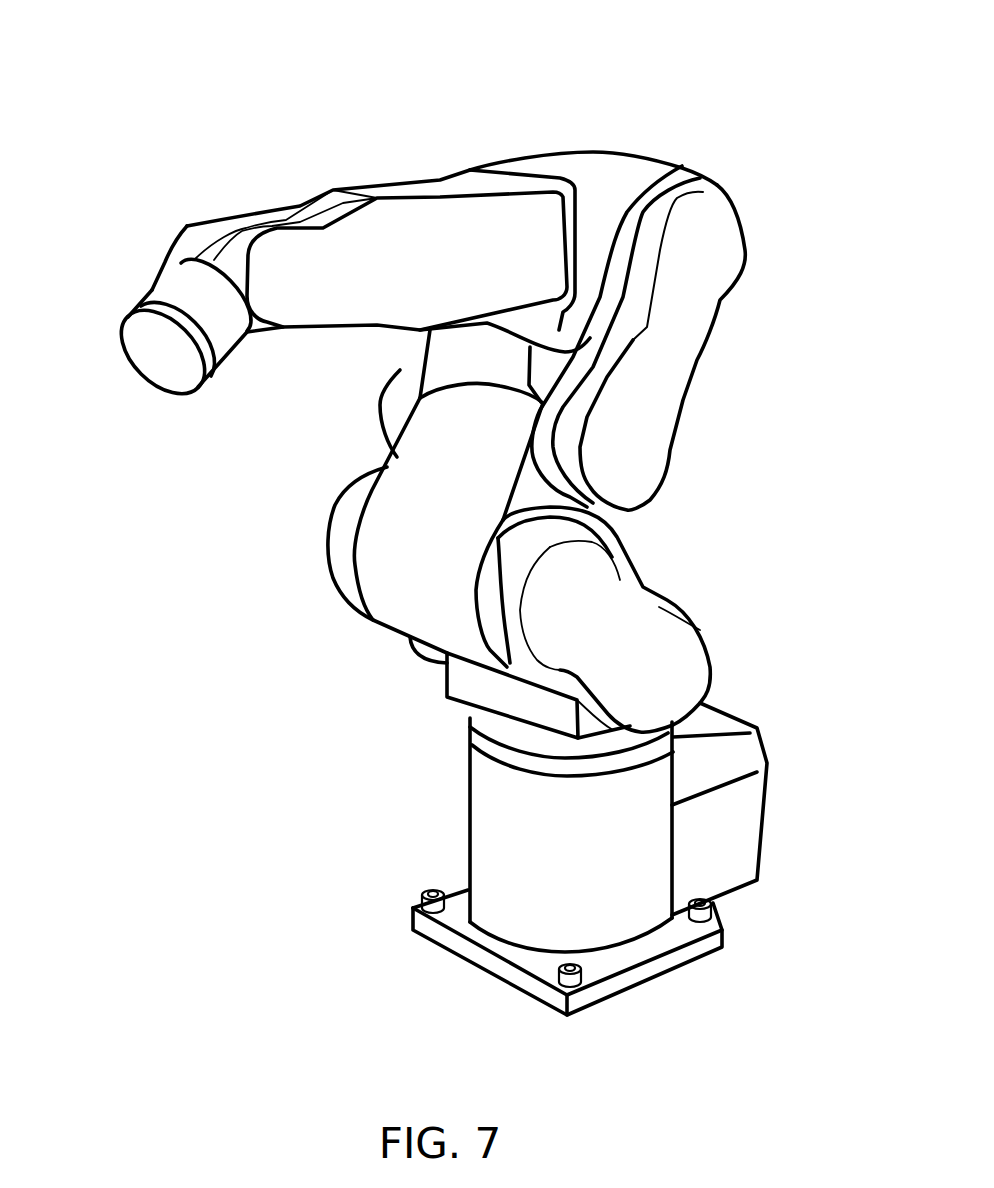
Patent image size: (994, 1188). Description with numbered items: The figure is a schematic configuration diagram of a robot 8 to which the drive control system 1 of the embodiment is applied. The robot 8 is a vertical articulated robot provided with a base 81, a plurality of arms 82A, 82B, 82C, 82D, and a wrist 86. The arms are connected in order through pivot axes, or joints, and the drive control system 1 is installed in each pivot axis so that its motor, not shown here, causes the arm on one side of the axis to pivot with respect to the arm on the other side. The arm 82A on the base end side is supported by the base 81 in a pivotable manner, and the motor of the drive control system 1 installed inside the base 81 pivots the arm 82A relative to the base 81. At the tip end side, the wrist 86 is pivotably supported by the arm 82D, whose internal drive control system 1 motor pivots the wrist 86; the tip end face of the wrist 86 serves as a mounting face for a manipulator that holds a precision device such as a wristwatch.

The robot 8 is at (727, 123).
The drive control system 1 is at (612, 177).
The base 81 is at (737, 760).
The arm 82A is at (692, 681).
The arm 82B is at (683, 355).
The arm 82C is at (575, 167).
The arm 82D is at (337, 228).
The wrist 86 is at (151, 292).